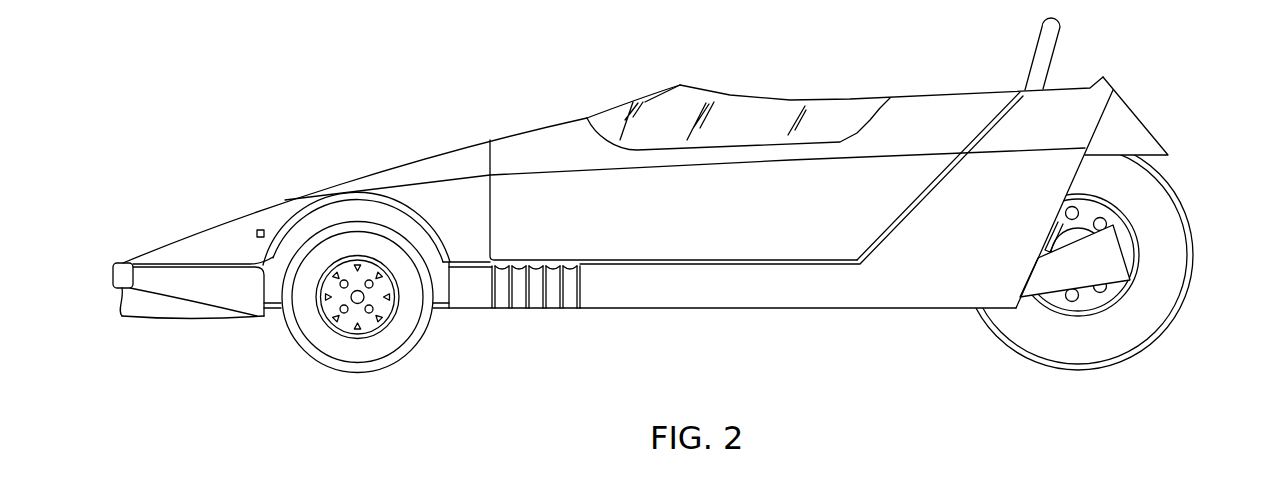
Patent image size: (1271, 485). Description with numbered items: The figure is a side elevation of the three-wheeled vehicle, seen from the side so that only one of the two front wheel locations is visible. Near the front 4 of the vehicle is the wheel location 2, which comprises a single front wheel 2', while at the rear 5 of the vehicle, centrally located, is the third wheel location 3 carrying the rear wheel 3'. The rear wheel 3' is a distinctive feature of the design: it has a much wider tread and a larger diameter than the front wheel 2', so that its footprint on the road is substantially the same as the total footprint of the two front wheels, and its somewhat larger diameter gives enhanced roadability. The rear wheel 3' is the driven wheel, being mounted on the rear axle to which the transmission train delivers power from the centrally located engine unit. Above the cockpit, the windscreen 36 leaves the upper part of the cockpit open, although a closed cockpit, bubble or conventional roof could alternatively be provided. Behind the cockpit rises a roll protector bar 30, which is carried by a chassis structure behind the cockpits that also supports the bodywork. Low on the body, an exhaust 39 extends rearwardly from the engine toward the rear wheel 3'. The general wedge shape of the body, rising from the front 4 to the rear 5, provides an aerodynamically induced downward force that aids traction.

The wheel location 2 is at (357, 355).
The front wheel 2' is at (365, 297).
The wheel location 3 is at (1078, 323).
The rear wheel 3' is at (1078, 259).
The front 4 is at (82, 274).
The rear 5 is at (1253, 274).
The roll protector bar 30 is at (1040, 48).
The windscreen 36 is at (755, 110).
The exhaust 39 is at (1090, 273).